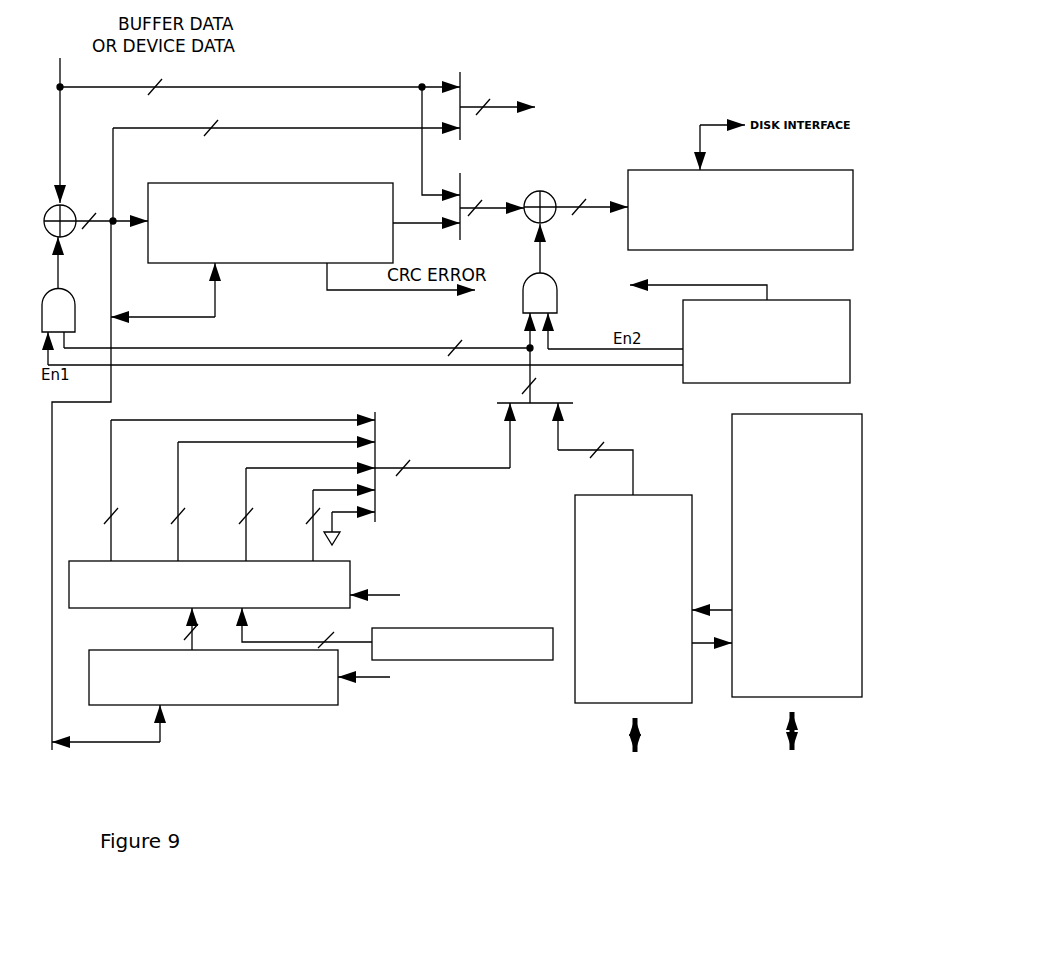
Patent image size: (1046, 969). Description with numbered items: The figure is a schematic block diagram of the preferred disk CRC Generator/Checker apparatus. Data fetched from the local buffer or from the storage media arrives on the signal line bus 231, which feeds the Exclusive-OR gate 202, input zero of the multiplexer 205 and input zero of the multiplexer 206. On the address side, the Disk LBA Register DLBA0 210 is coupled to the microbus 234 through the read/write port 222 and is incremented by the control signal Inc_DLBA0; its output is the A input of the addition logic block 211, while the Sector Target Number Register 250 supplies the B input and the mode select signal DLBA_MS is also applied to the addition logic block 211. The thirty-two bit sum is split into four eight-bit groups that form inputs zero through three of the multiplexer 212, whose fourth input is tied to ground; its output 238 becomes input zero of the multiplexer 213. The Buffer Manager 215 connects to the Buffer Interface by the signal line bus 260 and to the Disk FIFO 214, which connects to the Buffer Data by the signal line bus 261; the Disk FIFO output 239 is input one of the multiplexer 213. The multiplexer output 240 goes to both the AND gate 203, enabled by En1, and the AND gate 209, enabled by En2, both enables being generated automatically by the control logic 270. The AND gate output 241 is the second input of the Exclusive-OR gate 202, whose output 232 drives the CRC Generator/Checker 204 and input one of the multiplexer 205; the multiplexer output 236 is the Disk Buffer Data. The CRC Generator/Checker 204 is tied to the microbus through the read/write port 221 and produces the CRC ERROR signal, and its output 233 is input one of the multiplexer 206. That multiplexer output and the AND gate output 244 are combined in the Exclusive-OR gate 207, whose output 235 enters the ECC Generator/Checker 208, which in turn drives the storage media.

The Exclusive-OR gate 202 is at (70, 211).
The AND gate 203 is at (66, 298).
The CRC Generator/Checker 204 is at (205, 184).
The multiplexer 205 is at (460, 76).
The multiplexer 206 is at (460, 178).
The Exclusive-OR gate 207 is at (548, 196).
The ECC Generator/Checker 208 is at (636, 170).
The AND gate 209 is at (557, 286).
The Disk LBA Register DLBA0 210 is at (132, 651).
The addition logic block 211 is at (344, 561).
The multiplexer 212 is at (375, 432).
The multiplexer 213 is at (566, 406).
The Disk First-In First-Out Stack (FIFO) 214 is at (655, 495).
The Buffer Manager 215 is at (805, 414).
The read/write port 221 is at (158, 317).
The read/write port 222 is at (160, 736).
The signal line bus 231 is at (62, 75).
The output of the Exclusive-OR gate 232 is at (104, 226).
The output of the CRC Generator/Checker 233 is at (405, 226).
The microbus 234 is at (484, 212).
The output of the Exclusive-OR gate 235 is at (578, 211).
The output of the multiplexer 236 is at (498, 103).
The output of the multiplexer 238 is at (434, 468).
The output of the Disk FIFO 239 is at (633, 468).
The output of the multiplexer 240 is at (292, 352).
The output of the AND gate 241 is at (58, 280).
The output of the AND gate 244 is at (540, 262).
The Sector Target Number Register 250 is at (540, 628).
The signal line bus 260 is at (797, 736).
The signal line bus 261 is at (640, 738).
The control logic 270 is at (786, 300).